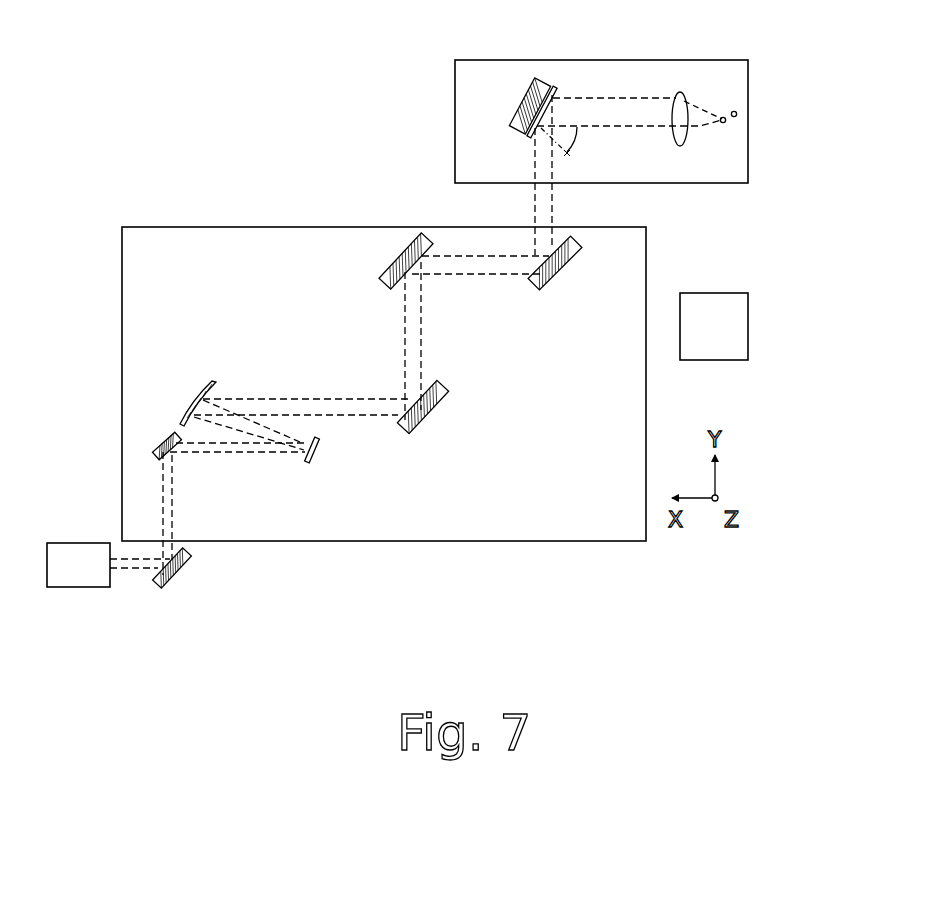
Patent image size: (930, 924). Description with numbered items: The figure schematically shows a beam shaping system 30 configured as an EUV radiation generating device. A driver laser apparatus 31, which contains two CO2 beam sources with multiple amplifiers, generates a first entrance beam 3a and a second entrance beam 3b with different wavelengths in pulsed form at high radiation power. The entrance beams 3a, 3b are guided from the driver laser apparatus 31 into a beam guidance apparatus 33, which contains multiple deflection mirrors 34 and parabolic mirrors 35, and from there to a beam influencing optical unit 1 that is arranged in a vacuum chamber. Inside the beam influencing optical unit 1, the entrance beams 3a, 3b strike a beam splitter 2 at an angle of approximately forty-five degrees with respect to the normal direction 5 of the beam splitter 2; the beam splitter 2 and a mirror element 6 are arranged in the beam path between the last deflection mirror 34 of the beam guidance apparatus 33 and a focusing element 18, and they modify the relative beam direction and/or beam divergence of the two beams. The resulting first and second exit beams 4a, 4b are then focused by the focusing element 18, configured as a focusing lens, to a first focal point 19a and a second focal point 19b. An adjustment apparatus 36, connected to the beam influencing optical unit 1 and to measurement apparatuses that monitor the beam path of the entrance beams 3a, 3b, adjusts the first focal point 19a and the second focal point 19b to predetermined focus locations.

The beam shaping system 30 is at (190, 93).
The beam influencing optical unit 1 is at (488, 71).
The mirror element 6 is at (537, 77).
The beam splitter 2 is at (527, 138).
The first exit beam 4a is at (622, 128).
The second exit beam 4b is at (588, 100).
The focusing element 18 is at (677, 93).
The first focal point 19a is at (736, 111).
The second focal point 19b is at (723, 115).
The normal direction 5 is at (545, 167).
The first entrance beam 3a is at (540, 202).
The second entrance beam 3b is at (131, 568).
The beam guidance apparatus 33 is at (153, 318).
The deflection mirror 34 is at (384, 270).
The parabolic mirror 35 is at (197, 402).
The driver laser apparatus 31 is at (73, 553).
The adjustment apparatus 36 is at (720, 326).